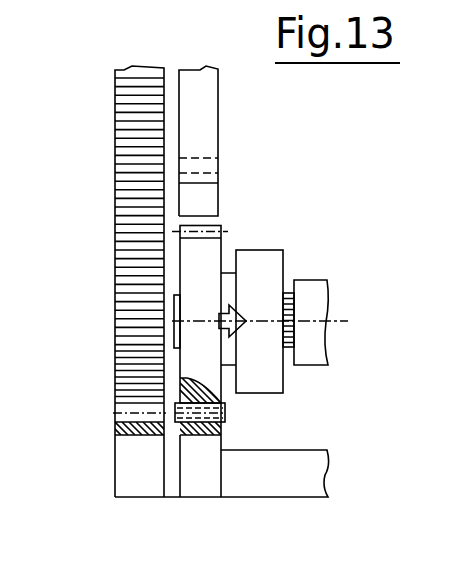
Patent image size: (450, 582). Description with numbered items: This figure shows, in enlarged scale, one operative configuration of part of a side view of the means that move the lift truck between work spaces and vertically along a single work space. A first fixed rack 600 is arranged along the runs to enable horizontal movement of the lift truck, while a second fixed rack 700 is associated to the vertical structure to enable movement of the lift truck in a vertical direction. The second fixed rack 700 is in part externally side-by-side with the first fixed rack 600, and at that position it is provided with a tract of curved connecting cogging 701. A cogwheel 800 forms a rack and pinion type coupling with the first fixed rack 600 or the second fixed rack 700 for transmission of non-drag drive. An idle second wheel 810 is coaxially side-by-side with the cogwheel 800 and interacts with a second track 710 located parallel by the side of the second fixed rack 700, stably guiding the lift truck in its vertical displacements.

The first fixed racks 600 is at (170, 447).
The second fixed racks 700 is at (100, 297).
The tracts of curved connecting cogging 701 is at (135, 363).
The second tracks 710 is at (205, 135).
The cogwheels 800 is at (210, 248).
The idle second wheels 810 is at (273, 263).